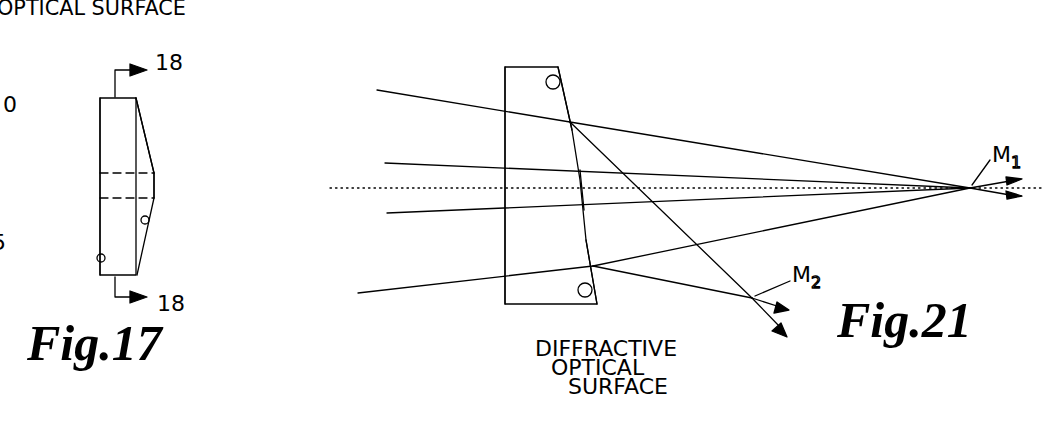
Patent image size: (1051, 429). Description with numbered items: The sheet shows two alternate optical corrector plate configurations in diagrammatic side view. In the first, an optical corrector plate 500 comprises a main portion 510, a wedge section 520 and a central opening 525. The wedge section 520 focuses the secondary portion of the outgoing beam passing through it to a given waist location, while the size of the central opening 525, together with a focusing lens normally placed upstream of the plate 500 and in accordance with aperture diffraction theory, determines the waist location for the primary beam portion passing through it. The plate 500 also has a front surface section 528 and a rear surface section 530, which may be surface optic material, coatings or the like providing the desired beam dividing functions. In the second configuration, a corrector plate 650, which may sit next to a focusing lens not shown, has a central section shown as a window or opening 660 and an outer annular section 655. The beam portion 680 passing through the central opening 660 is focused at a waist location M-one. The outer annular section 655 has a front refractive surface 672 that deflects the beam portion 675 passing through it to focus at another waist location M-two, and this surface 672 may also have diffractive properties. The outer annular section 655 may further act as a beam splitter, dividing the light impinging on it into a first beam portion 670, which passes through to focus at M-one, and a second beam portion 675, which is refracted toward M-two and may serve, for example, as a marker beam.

In FIG. 17, the optical corrector plate 500 is at (156, 112).
In FIG. 17, the main portion 510 is at (103, 113).
In FIG. 17, the wedge section 520 is at (143, 145).
In FIG. 17, the central opening 525 is at (182, 170).
In FIG. 17, the front surface section 528 is at (148, 225).
In FIG. 17, the rear surface section 530 is at (99, 261).
In FIG. 21, the corrector plate 650 is at (578, 50).
In FIG. 21, the central opening 660 is at (507, 82).
In FIG. 21, the front refractive surface 672 is at (560, 78).
In FIG. 21, the outer annular section 655 is at (643, 67).
In FIG. 21, the first beam portion 670 is at (743, 148).
In FIG. 21, the second beam portion 675 is at (720, 270).
In FIG. 21, the beam portion 680 is at (735, 199).